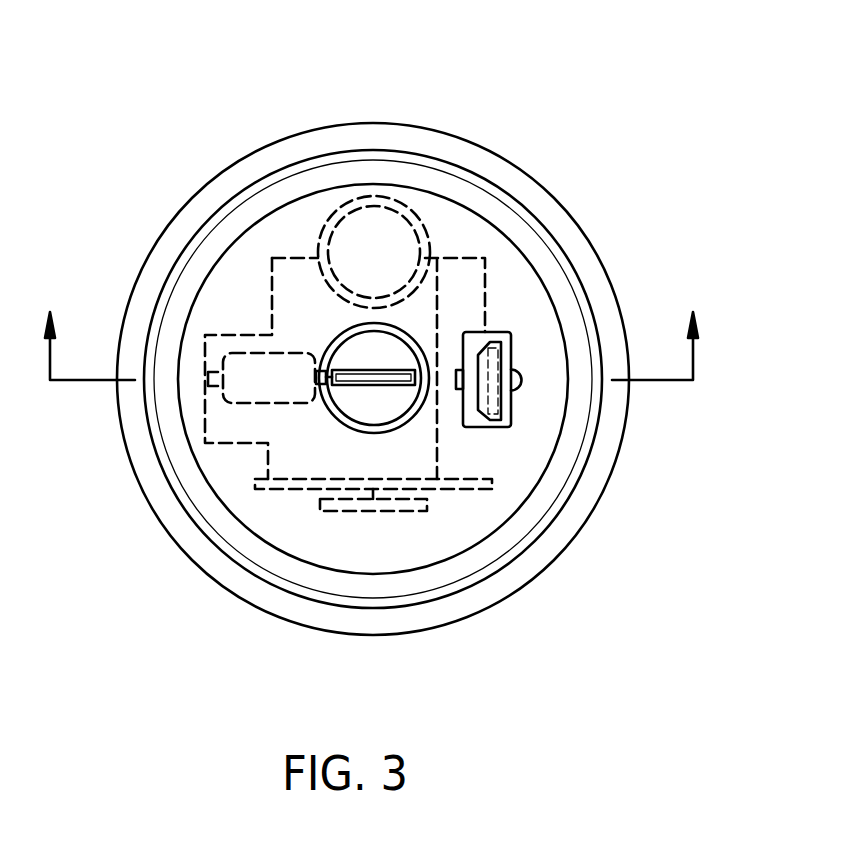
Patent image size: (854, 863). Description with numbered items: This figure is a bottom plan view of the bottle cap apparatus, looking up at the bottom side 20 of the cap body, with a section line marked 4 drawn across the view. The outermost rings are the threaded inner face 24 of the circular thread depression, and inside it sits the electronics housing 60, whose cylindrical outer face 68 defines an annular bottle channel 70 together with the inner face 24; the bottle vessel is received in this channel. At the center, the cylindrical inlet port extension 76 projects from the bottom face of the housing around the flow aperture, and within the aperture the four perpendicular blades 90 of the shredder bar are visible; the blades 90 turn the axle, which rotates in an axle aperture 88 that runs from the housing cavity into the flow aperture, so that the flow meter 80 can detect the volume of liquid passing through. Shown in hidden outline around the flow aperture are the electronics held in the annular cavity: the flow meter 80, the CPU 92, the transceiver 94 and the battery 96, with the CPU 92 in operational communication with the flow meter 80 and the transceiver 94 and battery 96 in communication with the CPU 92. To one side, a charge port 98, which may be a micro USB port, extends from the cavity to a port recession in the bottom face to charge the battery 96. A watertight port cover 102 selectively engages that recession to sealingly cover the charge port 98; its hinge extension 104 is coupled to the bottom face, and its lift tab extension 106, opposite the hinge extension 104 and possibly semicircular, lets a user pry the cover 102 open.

The section line 4- 4 is at (370, 323).
The bottom side 20 is at (432, 140).
The inner face 24 is at (163, 297).
The electronics housing 60 is at (397, 377).
The cylindrical outer face 68 is at (556, 463).
The annular bottle channel 70 is at (283, 188).
The cylindrical inlet port extension 76 is at (340, 418).
The flow meter 80 is at (235, 393).
The axle aperture 88 is at (318, 377).
The blades 90 is at (383, 373).
The CPU 92 is at (282, 487).
The transceiver 94 is at (340, 505).
The battery 96 is at (362, 232).
The charge port 98 is at (495, 352).
The watertight port cover 102 is at (461, 392).
The hinge extension 104 is at (497, 428).
The lift tab extension 106 is at (522, 381).